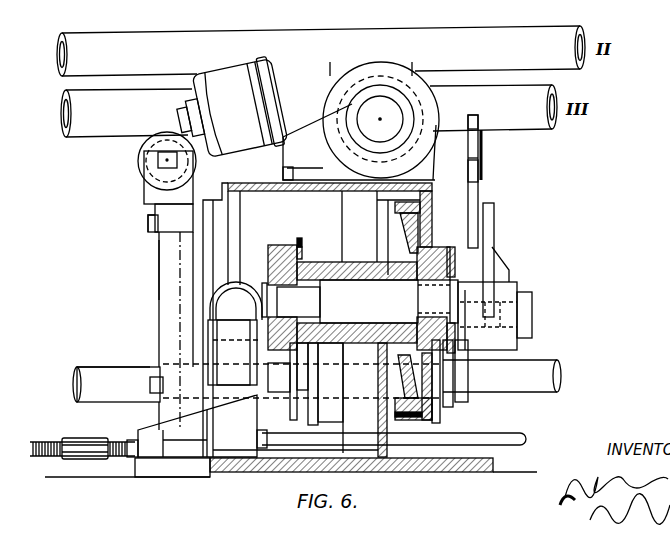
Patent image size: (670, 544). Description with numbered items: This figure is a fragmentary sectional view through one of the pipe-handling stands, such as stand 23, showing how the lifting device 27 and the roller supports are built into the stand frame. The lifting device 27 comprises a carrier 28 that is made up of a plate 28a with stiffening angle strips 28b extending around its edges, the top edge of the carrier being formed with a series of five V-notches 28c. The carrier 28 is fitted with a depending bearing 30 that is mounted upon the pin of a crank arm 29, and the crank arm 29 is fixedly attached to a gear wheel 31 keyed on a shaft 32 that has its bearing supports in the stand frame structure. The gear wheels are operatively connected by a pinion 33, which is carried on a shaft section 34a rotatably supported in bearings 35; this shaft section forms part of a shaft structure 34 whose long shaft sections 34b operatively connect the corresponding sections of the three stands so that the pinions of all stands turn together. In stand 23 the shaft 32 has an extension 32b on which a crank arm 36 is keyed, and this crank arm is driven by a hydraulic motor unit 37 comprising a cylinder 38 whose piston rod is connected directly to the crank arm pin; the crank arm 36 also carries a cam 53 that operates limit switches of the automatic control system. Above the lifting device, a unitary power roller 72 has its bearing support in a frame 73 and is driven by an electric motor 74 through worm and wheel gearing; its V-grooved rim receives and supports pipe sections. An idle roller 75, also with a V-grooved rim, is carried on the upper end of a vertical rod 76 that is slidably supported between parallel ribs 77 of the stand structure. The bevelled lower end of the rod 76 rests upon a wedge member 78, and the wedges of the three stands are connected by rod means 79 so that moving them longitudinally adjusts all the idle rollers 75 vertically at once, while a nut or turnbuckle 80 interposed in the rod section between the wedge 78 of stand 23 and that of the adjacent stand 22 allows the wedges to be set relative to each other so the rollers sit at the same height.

The electric motor 74 is at (231, 73).
The unitary power roller 72 is at (427, 106).
The frame 73 is at (431, 161).
The stand 22 is at (253, 182).
The crank arm 36 is at (273, 247).
The gear wheel 31 is at (422, 206).
The crank arm 29 is at (435, 254).
The shaft 32 is at (352, 292).
The shaft extension 32b is at (306, 284).
The cam 53 is at (300, 247).
The hydraulic motor unit 37 is at (229, 296).
The cylinder 38 is at (242, 300).
The idle roller 75 is at (140, 157).
The vertical rod 76 is at (158, 210).
The parallel rib 77 is at (172, 270).
The stand 23 is at (138, 251).
The shaft structure 34 is at (88, 358).
The long shaft section 34b is at (552, 409).
The shaft section 34a is at (390, 392).
The bearing 35 is at (333, 408).
The pinion 33 is at (411, 423).
The depending bearing 30 is at (503, 292).
The lifting device 27 is at (514, 263).
The carrier 28 is at (483, 190).
The plate 28a is at (483, 148).
The stiffening angle strip 28b is at (480, 172).
The V-notch 28c is at (475, 125).
The wedge member 78 is at (153, 430).
The rod means 79 is at (48, 440).
The nut or turnbuckle 80 is at (90, 460).